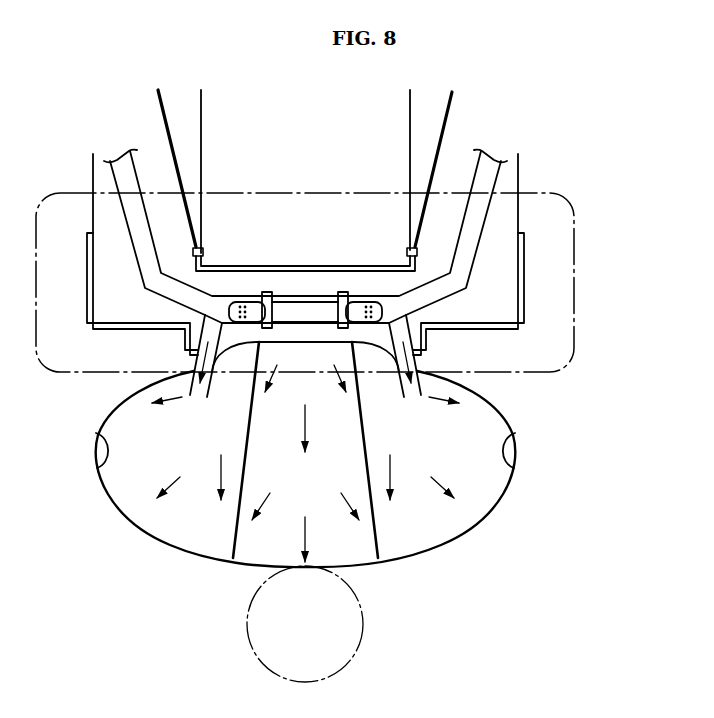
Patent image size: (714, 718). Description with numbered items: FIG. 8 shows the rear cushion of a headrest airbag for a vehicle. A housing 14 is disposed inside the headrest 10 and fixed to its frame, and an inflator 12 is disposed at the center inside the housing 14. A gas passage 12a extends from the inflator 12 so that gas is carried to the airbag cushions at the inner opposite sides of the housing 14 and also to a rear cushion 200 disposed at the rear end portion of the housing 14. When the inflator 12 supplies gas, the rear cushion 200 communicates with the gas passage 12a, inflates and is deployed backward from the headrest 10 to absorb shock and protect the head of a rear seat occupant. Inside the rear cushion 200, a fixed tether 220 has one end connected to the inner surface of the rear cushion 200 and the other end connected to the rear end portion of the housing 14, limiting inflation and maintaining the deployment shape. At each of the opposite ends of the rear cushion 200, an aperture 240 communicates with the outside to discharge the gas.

The headrest 10 is at (573, 230).
The housing 14 is at (523, 265).
The inflator 12 is at (292, 307).
The gas passage 12a is at (389, 296).
The rear cushion 200 is at (489, 523).
The fixed tether 220 is at (373, 522).
The aperture 240 is at (512, 452).